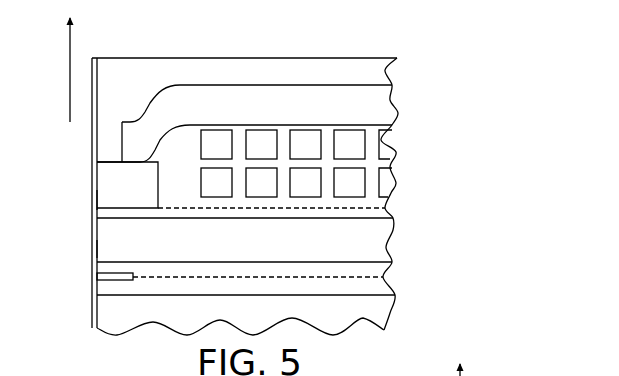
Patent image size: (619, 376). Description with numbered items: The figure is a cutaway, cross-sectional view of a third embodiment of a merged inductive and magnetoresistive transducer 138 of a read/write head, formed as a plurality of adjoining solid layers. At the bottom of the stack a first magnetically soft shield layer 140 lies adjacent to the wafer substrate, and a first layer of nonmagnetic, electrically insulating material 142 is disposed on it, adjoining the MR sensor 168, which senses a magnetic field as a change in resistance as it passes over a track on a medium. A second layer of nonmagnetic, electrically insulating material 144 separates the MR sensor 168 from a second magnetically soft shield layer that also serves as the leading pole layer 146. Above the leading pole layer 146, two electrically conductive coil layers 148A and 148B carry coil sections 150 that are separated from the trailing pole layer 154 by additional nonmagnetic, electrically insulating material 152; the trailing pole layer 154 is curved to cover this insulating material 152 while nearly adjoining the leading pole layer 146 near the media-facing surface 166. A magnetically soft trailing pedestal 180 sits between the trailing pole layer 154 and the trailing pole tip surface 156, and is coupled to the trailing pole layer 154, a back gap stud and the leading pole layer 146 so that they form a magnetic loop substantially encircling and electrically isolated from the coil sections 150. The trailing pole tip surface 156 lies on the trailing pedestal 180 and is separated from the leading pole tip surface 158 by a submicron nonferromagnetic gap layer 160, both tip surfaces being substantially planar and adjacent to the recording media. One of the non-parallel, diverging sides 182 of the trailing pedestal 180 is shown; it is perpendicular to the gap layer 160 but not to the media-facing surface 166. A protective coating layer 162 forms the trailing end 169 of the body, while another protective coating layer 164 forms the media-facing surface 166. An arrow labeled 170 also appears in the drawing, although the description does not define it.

The merged inductive and magnetoresistive transducer 138 is at (478, 64).
The first magnetically soft shield layer 140 is at (390, 313).
The first layer of nonmagnetic, electrically insulating material 142 is at (392, 292).
The second layer of nonmagnetic, electrically insulating material 144 is at (383, 272).
The leading pole layer 146 is at (380, 247).
The first electrically conductive coil layer 148A is at (401, 193).
The second electrically conductive coil layer 148B is at (400, 166).
The coil sections 150 is at (348, 185).
The nonmagnetic, electrically insulating material 152 is at (180, 163).
The trailing pole layer 154 is at (391, 116).
The trailing pole tip surface 156 is at (101, 198).
The leading pole tip surface 158 is at (103, 248).
The submicron nonferromagnetic gap layer 160 is at (390, 212).
The protective coating layer 162 is at (380, 81).
The protective coating layer 164 is at (95, 315).
The media-facing surface 166 is at (90, 295).
The MR sensor 168 is at (97, 276).
The trailing end 169 is at (236, 55).
The vertical direction 170 is at (72, 46).
The trailing pedestal 180 is at (128, 182).
The diverging side 182 is at (119, 183).